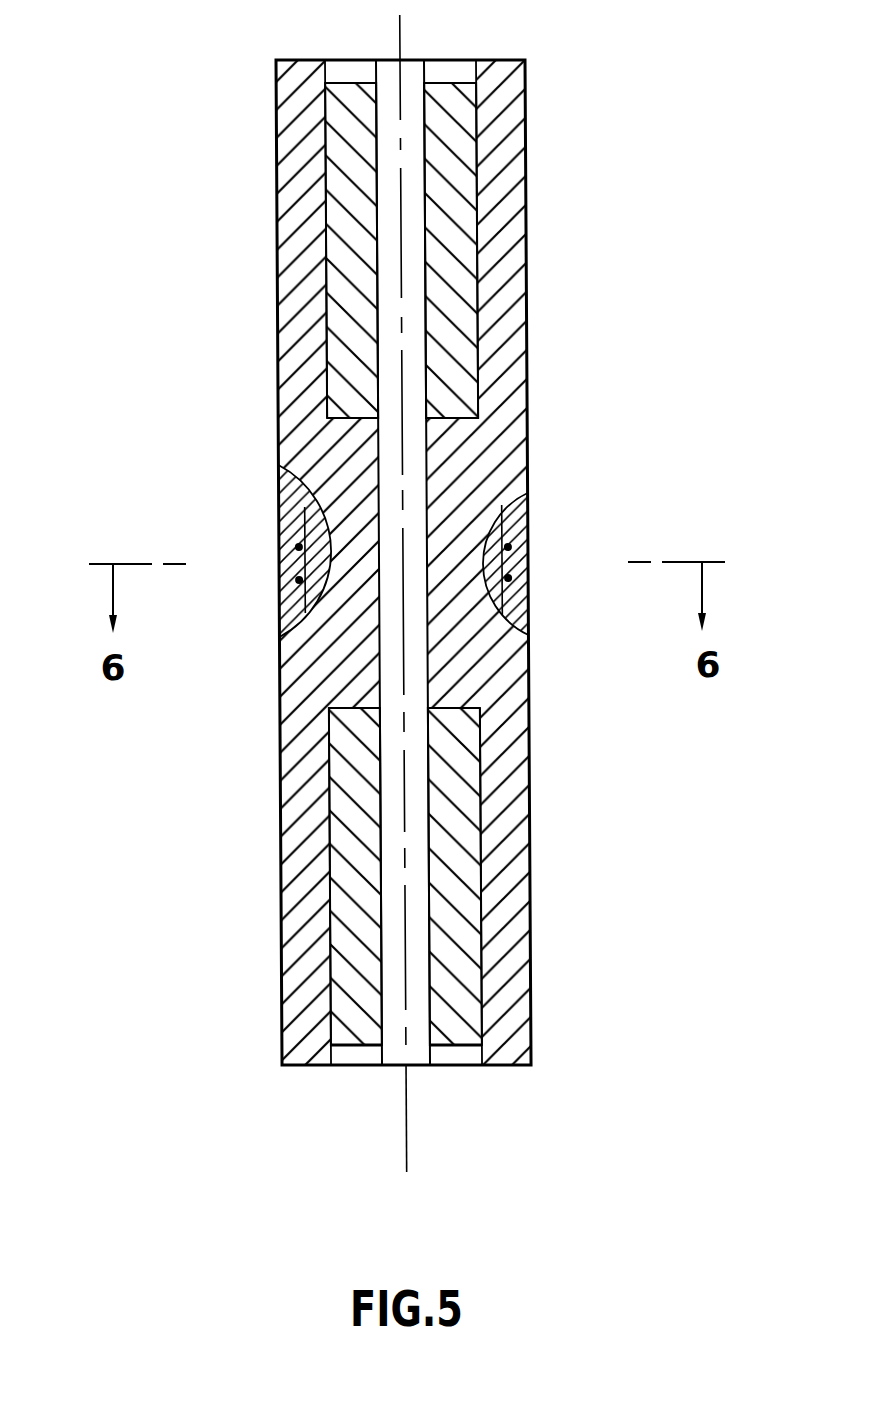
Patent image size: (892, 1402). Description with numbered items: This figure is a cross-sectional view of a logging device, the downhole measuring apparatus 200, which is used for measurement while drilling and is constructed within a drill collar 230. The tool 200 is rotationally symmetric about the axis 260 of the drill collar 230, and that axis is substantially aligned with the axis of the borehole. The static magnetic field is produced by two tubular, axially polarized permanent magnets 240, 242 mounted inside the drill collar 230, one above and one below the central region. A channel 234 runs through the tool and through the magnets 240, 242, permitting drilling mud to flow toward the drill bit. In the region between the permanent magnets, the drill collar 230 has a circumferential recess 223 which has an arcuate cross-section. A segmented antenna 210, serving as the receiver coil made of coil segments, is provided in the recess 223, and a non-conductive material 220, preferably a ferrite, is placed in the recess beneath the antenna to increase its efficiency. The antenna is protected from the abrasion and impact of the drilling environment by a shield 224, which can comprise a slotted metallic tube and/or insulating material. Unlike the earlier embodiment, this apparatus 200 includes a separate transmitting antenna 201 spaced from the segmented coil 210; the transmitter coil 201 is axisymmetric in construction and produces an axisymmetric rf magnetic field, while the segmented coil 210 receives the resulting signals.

The downhole measuring apparatus 200 is at (394, 624).
The transmitting antenna 201 is at (511, 578).
The segmented antenna 210 is at (510, 546).
The non-conductive material 220 is at (523, 622).
The circumferential recess 223 is at (283, 467).
The shield 224 is at (524, 503).
The drill collar 230 is at (506, 114).
The channel 234 is at (412, 202).
The permanent magnet 240 is at (455, 308).
The permanent magnet 242 is at (455, 930).
The axis 260 is at (407, 1153).